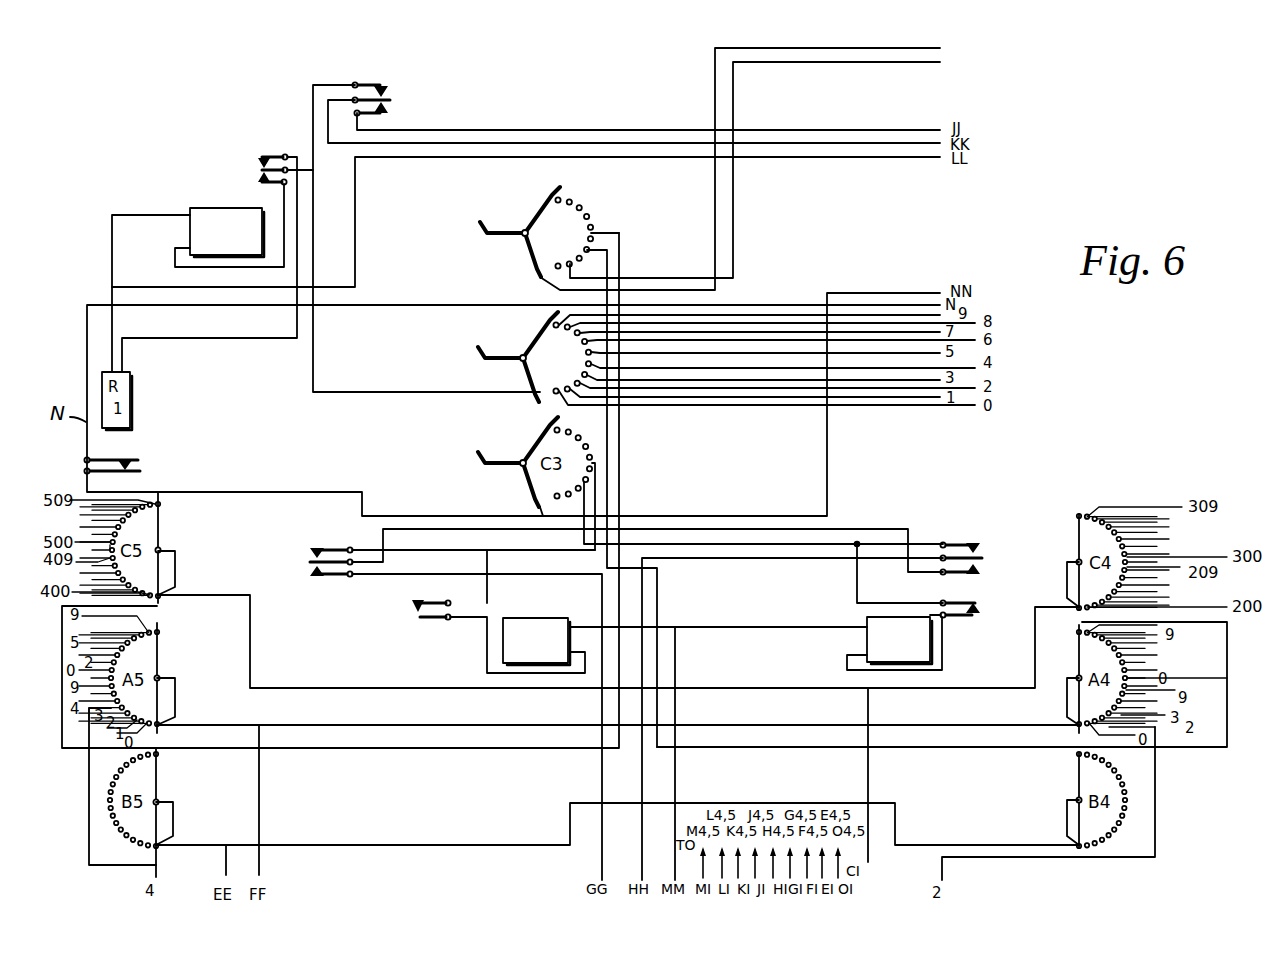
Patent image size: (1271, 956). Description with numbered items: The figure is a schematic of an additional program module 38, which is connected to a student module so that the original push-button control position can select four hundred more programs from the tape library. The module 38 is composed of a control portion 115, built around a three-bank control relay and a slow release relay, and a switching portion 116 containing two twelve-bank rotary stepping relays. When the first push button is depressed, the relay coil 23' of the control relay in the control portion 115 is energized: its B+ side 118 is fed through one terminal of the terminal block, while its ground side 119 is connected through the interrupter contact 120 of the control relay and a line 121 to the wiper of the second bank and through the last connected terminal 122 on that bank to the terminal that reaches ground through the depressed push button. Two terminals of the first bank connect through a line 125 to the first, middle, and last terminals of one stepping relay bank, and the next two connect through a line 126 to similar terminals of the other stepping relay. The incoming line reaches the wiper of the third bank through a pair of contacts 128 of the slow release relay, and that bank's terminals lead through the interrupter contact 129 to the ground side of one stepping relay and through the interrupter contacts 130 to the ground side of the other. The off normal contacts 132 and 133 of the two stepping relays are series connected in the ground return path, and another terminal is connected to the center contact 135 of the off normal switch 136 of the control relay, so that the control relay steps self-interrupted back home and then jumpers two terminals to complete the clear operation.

The additional program module 38 is at (542, 62).
The control portion 115 is at (428, 233).
The switching portion 116 is at (783, 596).
The B+ side 118 is at (165, 215).
The ground side 119 is at (175, 258).
The interrupter contact 120 is at (243, 163).
The line 121 is at (313, 360).
The last connected terminal 122 is at (545, 319).
The S3 relay coil 23' is at (550, 423).
The line 125 is at (958, 748).
The line 126 is at (622, 474).
The pair of contacts 128 is at (150, 472).
The interrupter contact 129 is at (976, 606).
The interrupter contacts 130 is at (412, 606).
The off normal contacts 132 is at (1015, 536).
The off normal contacts 133 is at (290, 557).
The center contact 135 is at (390, 99).
The off normal switch 136 is at (363, 72).